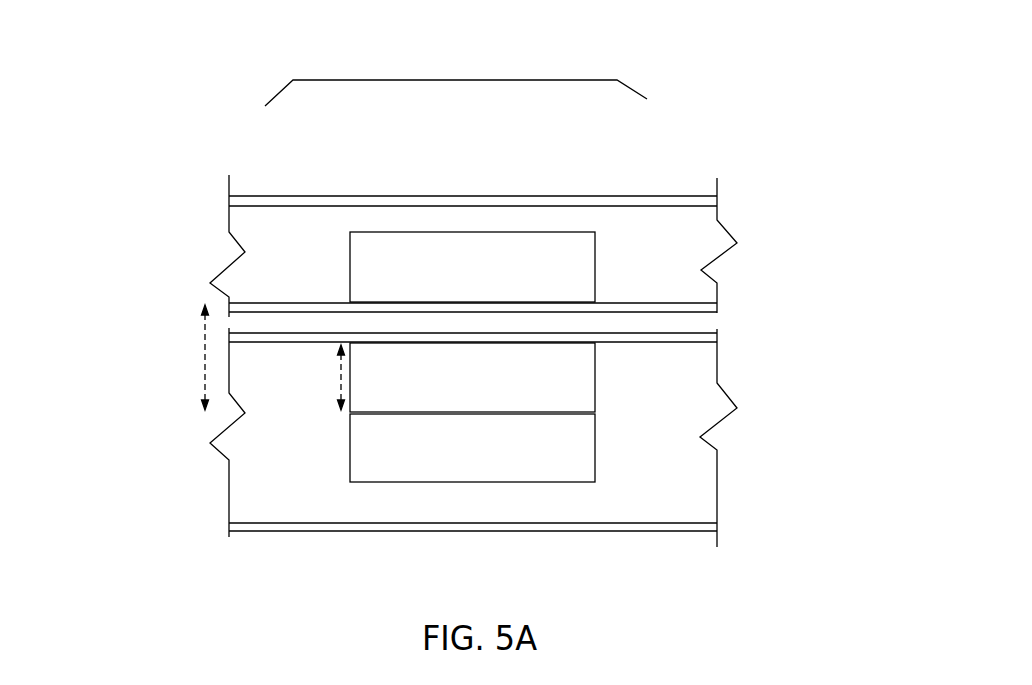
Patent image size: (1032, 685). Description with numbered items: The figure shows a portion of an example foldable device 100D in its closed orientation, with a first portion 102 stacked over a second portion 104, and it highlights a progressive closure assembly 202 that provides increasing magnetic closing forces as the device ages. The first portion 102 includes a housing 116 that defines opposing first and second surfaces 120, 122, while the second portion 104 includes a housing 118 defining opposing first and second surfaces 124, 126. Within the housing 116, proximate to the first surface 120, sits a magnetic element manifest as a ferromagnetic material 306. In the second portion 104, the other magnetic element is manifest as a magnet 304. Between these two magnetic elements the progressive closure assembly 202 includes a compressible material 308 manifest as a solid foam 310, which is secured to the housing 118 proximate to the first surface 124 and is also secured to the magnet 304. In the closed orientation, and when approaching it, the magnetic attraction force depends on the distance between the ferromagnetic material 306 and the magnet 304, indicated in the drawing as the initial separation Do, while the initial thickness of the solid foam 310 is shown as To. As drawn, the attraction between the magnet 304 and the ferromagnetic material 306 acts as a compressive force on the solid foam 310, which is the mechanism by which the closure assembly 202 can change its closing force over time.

The device 100D is at (202, 46).
The progressive closure assembly 202 is at (430, 80).
The first portion 102 is at (300, 192).
The second portion 104 is at (318, 537).
The housing 116 is at (229, 203).
The housing 118 is at (688, 532).
The first surface 120 is at (711, 312).
The second surface 122 is at (696, 193).
The first surface 124 is at (558, 333).
The second surface 126 is at (242, 533).
The magnet 304 is at (525, 461).
The ferromagnetic material 306 is at (535, 293).
The compressible material 308 is at (602, 355).
The solid foam 310 is at (565, 391).